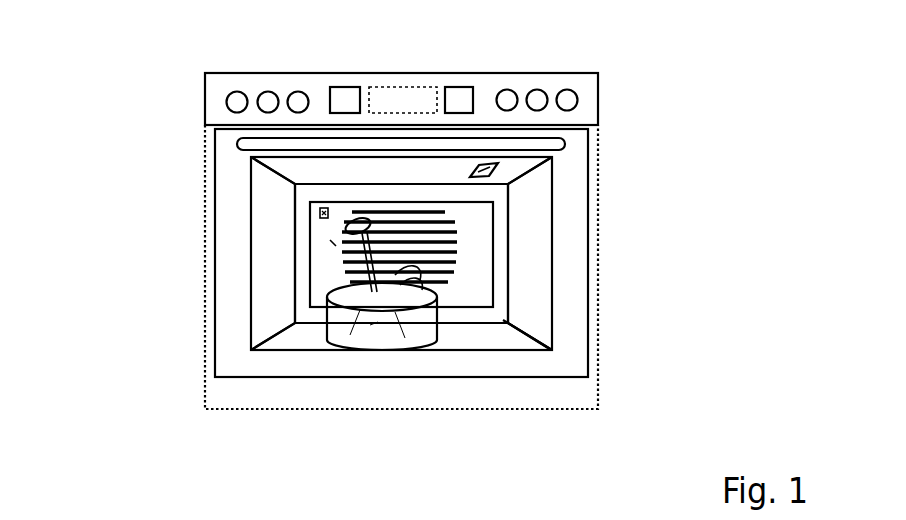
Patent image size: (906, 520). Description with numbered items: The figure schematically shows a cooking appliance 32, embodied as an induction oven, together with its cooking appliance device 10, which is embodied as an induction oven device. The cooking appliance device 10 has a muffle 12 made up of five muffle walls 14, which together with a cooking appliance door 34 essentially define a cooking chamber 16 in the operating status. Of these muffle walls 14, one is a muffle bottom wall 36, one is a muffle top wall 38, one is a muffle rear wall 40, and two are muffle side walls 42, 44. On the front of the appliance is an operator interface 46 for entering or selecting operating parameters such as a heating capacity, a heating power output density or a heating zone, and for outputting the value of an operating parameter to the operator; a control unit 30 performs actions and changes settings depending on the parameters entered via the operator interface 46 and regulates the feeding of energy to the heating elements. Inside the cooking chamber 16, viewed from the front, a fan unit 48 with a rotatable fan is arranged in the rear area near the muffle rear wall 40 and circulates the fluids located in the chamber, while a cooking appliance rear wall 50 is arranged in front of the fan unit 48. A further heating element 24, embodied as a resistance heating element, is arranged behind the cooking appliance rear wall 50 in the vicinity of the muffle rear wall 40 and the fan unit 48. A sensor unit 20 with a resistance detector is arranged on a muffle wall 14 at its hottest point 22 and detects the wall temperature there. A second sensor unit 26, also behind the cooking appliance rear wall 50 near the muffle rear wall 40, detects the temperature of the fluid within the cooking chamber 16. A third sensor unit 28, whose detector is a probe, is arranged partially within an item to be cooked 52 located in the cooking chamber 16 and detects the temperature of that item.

The cooking appliance device 10 is at (646, 117).
The muffle 12 is at (540, 201).
The muffle walls 14 is at (398, 305).
The cooking chamber 16 is at (488, 303).
The sensor unit 20 is at (487, 162).
The hottest point 22 is at (474, 161).
The further heating element 24 is at (440, 232).
The second sensor unit 26 is at (322, 208).
The third sensor unit 28 is at (345, 236).
The control unit 30 is at (410, 87).
The cooking appliance 32 is at (697, 76).
The cooking appliance door 34 is at (563, 283).
The muffle bottom wall 36 is at (482, 335).
The muffle top wall 38 is at (505, 171).
The muffle rear wall 40 is at (300, 195).
The muffle side wall 42 is at (272, 276).
The muffle side wall 44 is at (530, 308).
The operator interface 46 is at (343, 84).
The fan unit 48 is at (383, 300).
The cooking appliance rear wall 50 is at (330, 242).
The item to be cooked 52 is at (507, 321).